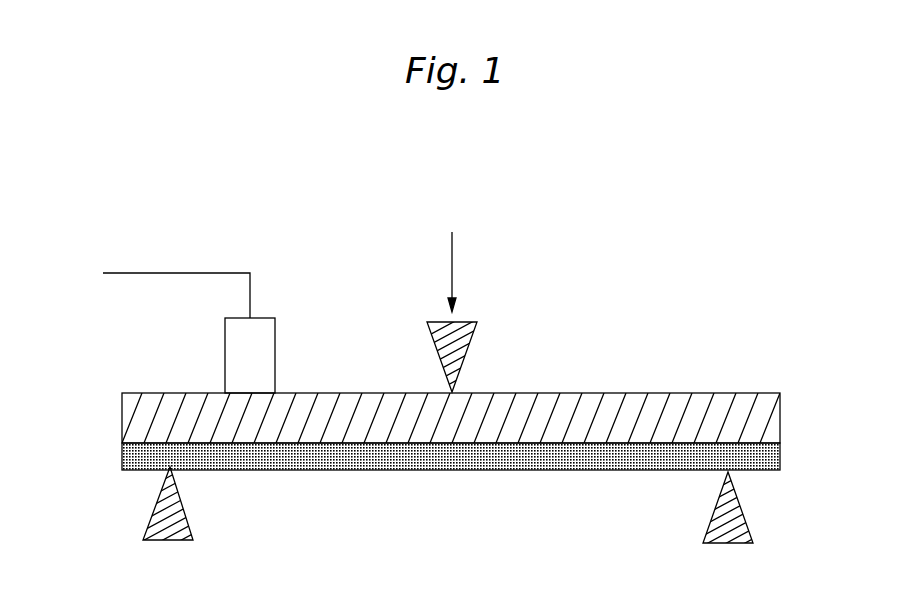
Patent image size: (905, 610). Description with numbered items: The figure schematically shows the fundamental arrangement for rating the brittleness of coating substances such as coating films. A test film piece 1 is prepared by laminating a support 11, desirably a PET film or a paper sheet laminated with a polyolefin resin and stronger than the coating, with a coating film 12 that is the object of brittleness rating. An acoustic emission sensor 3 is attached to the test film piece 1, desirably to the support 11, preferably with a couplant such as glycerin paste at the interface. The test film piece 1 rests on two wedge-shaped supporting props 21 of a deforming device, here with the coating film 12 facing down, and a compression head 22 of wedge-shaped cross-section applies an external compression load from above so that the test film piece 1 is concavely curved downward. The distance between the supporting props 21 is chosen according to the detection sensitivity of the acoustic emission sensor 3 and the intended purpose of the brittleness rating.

The test film piece 1 is at (422, 428).
The support 11 is at (122, 400).
The coating film 12 is at (122, 458).
The acoustic emission sensor 3 is at (275, 325).
The supporting props 21 is at (193, 535).
The compression head 22 is at (478, 328).